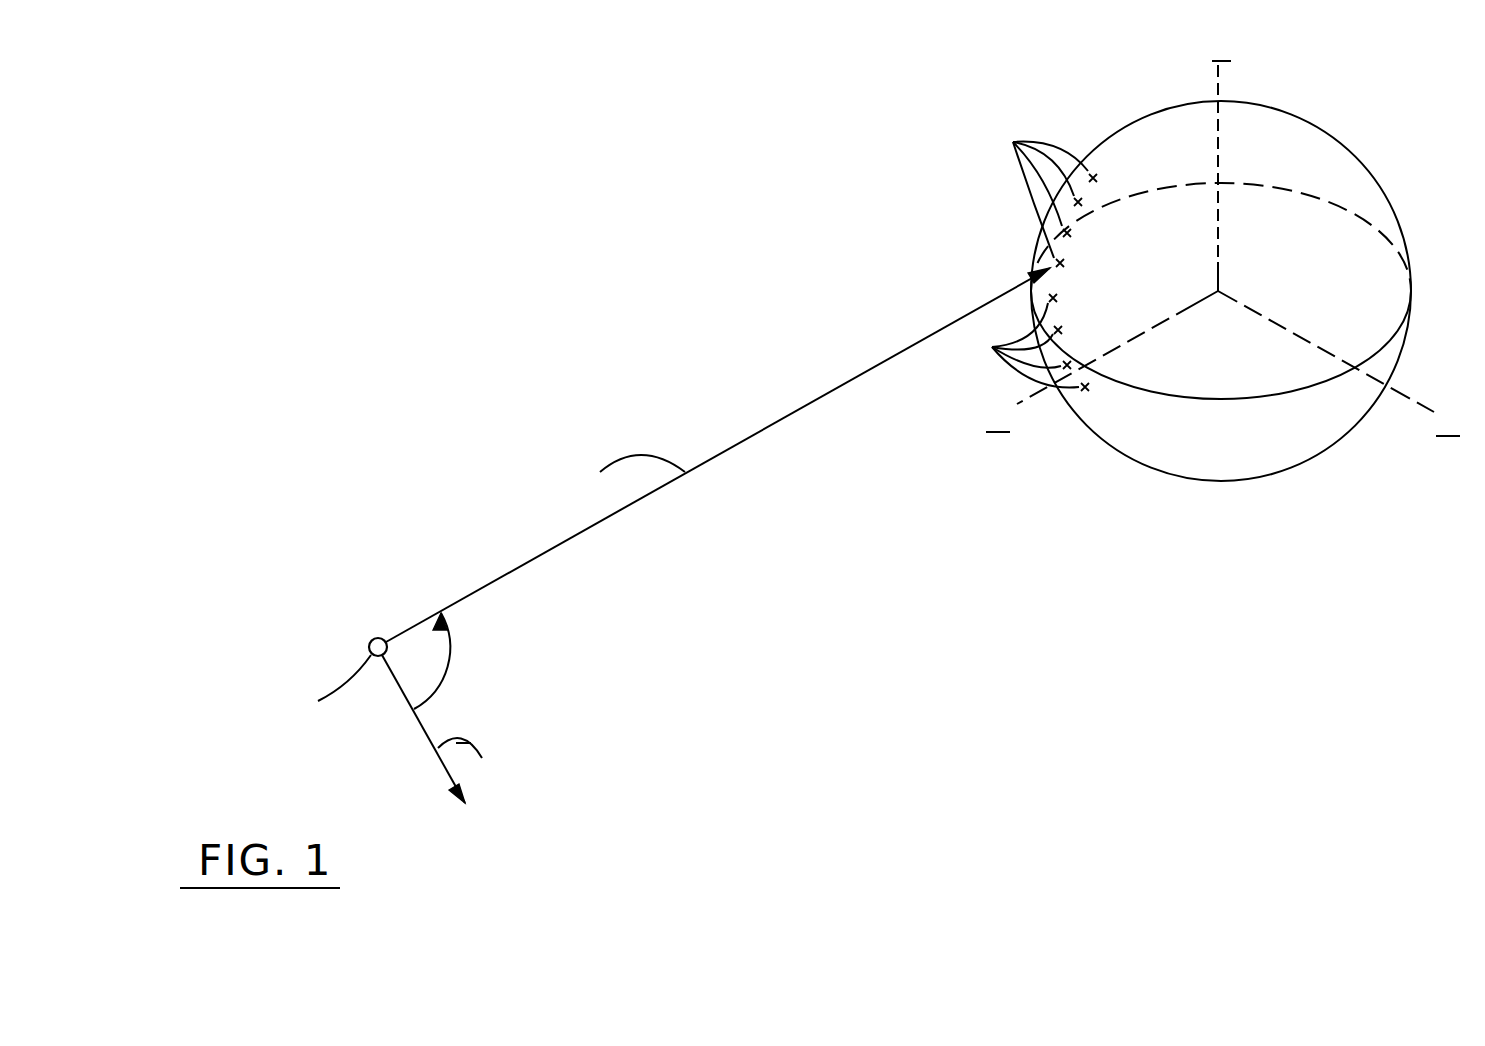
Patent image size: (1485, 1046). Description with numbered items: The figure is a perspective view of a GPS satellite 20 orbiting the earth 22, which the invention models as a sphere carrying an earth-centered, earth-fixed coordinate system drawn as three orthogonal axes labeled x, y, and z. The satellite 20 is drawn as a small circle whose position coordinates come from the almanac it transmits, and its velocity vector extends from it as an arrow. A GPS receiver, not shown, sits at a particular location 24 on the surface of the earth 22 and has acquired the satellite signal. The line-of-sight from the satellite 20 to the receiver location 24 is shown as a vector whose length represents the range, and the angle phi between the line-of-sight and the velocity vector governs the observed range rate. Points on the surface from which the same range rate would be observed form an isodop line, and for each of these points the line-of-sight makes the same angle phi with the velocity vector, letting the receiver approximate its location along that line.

The GPS satellite 20 is at (379, 636).
The earth 22 is at (1287, 137).
The receiver location 24 is at (1047, 248).